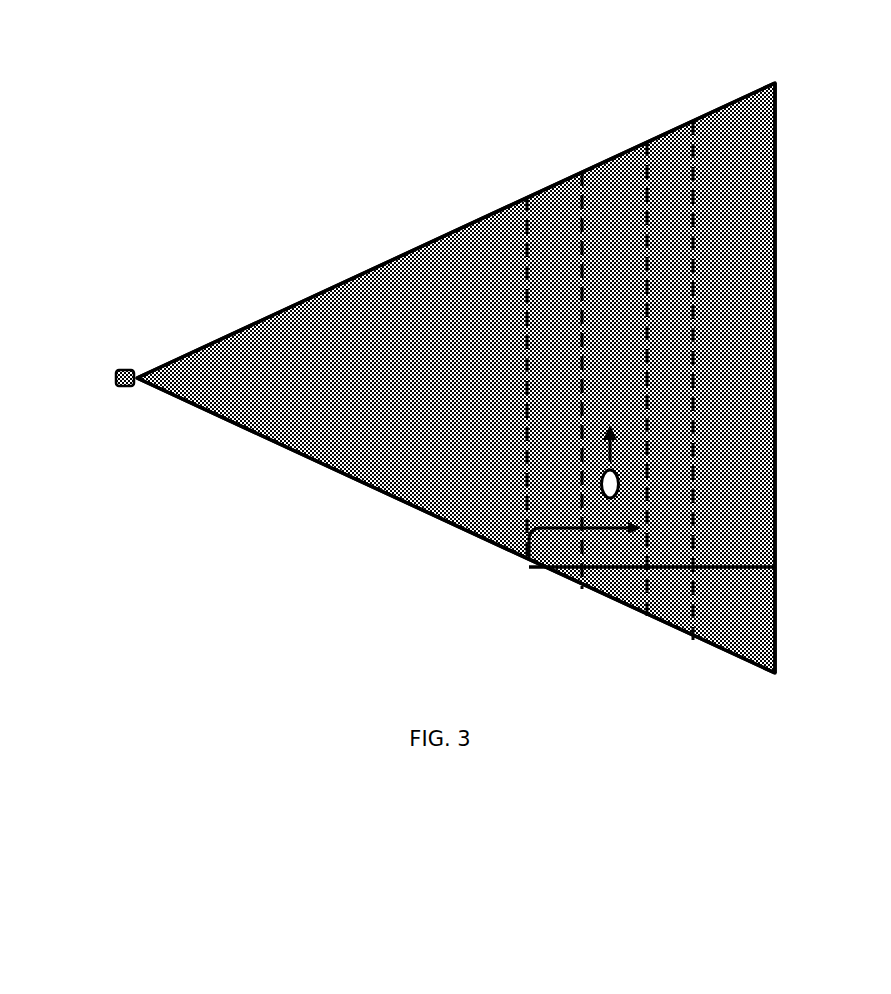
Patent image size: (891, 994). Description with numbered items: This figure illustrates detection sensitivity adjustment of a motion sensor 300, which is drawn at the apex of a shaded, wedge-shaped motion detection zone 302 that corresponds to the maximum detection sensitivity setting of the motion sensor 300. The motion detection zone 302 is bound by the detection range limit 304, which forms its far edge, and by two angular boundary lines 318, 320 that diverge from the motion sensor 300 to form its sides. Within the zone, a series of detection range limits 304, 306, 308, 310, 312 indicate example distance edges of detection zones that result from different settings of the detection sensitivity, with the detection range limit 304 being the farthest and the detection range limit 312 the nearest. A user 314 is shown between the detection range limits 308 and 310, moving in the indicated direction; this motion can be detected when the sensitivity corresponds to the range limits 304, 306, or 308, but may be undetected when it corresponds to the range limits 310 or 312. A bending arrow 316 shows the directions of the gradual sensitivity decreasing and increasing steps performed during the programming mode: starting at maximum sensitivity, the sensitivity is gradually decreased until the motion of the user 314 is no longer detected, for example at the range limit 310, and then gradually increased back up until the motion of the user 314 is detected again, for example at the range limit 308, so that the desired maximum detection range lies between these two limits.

The motion sensor 300 is at (120, 368).
The motion detection zone 302 is at (753, 173).
The detection range limit 304 is at (775, 255).
The detection range limit 306 is at (690, 160).
The detection range limit 308 is at (647, 173).
The detection range limit 310 is at (582, 200).
The detection range limit 312 is at (527, 240).
The user 314 is at (619, 484).
The bending arrow 316 is at (753, 568).
The angular boundary line 318 is at (307, 295).
The angular boundary line 320 is at (307, 463).